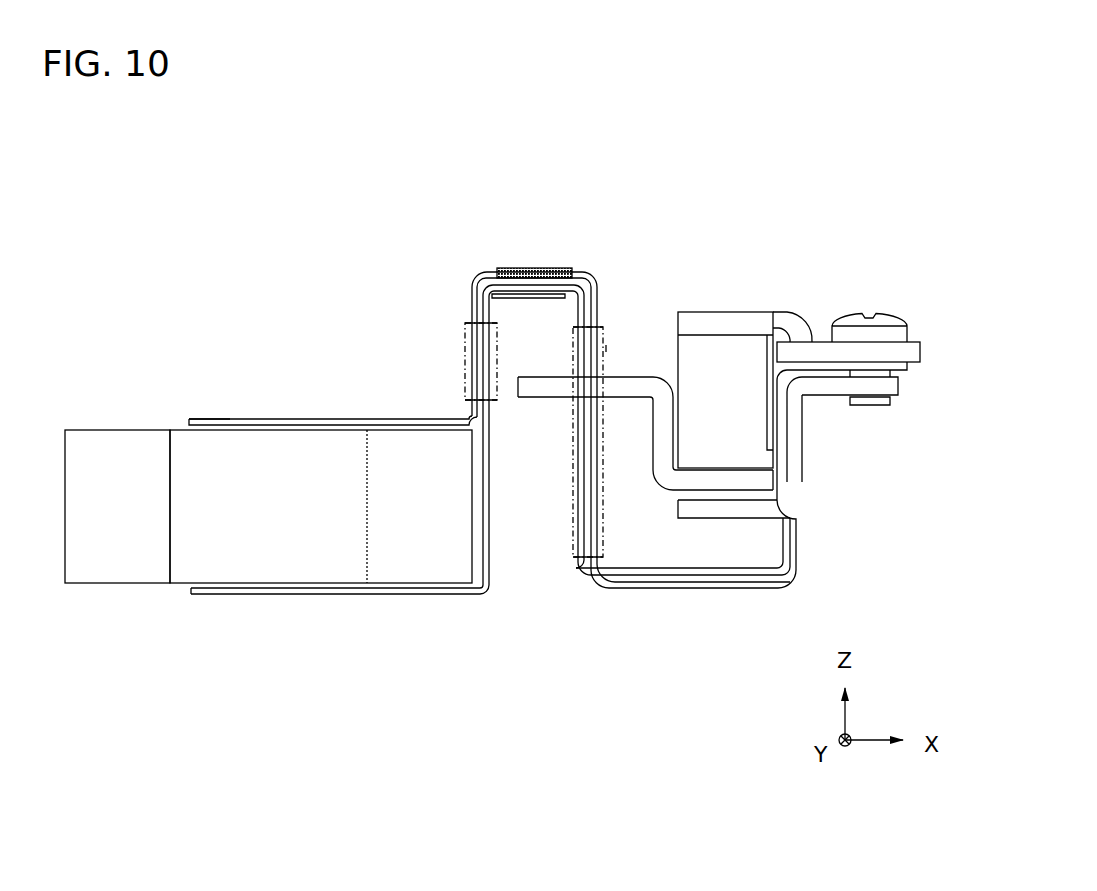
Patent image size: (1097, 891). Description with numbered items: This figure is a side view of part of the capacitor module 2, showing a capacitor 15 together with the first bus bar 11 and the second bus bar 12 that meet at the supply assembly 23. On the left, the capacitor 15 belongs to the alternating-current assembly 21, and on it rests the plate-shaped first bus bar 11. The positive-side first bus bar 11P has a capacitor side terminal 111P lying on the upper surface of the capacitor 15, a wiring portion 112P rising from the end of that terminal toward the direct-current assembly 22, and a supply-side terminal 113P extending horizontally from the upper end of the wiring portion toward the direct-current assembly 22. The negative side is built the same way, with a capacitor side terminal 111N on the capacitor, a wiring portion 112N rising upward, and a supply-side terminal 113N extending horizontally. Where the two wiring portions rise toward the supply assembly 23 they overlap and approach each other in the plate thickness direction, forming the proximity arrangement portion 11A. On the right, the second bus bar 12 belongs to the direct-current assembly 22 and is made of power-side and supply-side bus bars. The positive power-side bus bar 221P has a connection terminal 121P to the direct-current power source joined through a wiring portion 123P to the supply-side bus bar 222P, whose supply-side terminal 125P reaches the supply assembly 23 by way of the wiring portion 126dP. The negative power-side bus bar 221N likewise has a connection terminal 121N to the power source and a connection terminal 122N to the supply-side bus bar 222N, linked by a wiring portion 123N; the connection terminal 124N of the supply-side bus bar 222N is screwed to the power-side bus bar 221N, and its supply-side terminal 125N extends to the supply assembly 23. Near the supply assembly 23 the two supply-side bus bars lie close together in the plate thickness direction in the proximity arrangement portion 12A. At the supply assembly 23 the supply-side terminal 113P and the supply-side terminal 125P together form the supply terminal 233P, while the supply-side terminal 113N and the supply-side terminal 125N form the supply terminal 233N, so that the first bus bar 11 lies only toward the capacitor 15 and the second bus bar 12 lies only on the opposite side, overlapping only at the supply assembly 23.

The capacitor module 2 is at (725, 126).
The first bus bar 11 is at (329, 333).
The proximity arrangement portion 11A is at (465, 375).
The positive-side first bus bar 11P is at (242, 416).
The capacitor side terminal 111P is at (307, 425).
The capacitor side terminal 111N is at (343, 592).
The wiring portion 112P is at (472, 342).
The wiring portion 112N is at (490, 497).
The supply-side terminal 113P is at (501, 270).
The supply-side terminal 113N is at (549, 294).
The second bus bar 12 is at (740, 276).
The proximity arrangement portion 12A is at (573, 478).
The connection terminal 121P is at (537, 396).
The connection terminal 121N is at (870, 392).
The connection terminal 122N is at (882, 342).
The wiring portion 123P is at (672, 478).
The wiring portion 123N is at (797, 466).
The connection terminal 124N is at (858, 350).
The supply-side terminal 125P is at (541, 269).
The supply-side terminal 125N is at (552, 290).
The wiring portion 126dP is at (642, 360).
The capacitor 15 is at (125, 433).
The alternating-current assembly 21 is at (154, 353).
The direct-current assembly 22 is at (794, 230).
The power-side bus bar 221P is at (703, 312).
The power-side bus bar 221N is at (722, 507).
The supply-side bus bar 222P is at (618, 283).
The supply-side bus bar 222N is at (640, 590).
The supply assembly 23 is at (584, 230).
The supply terminal 233P is at (527, 268).
The supply terminal 233N is at (527, 306).